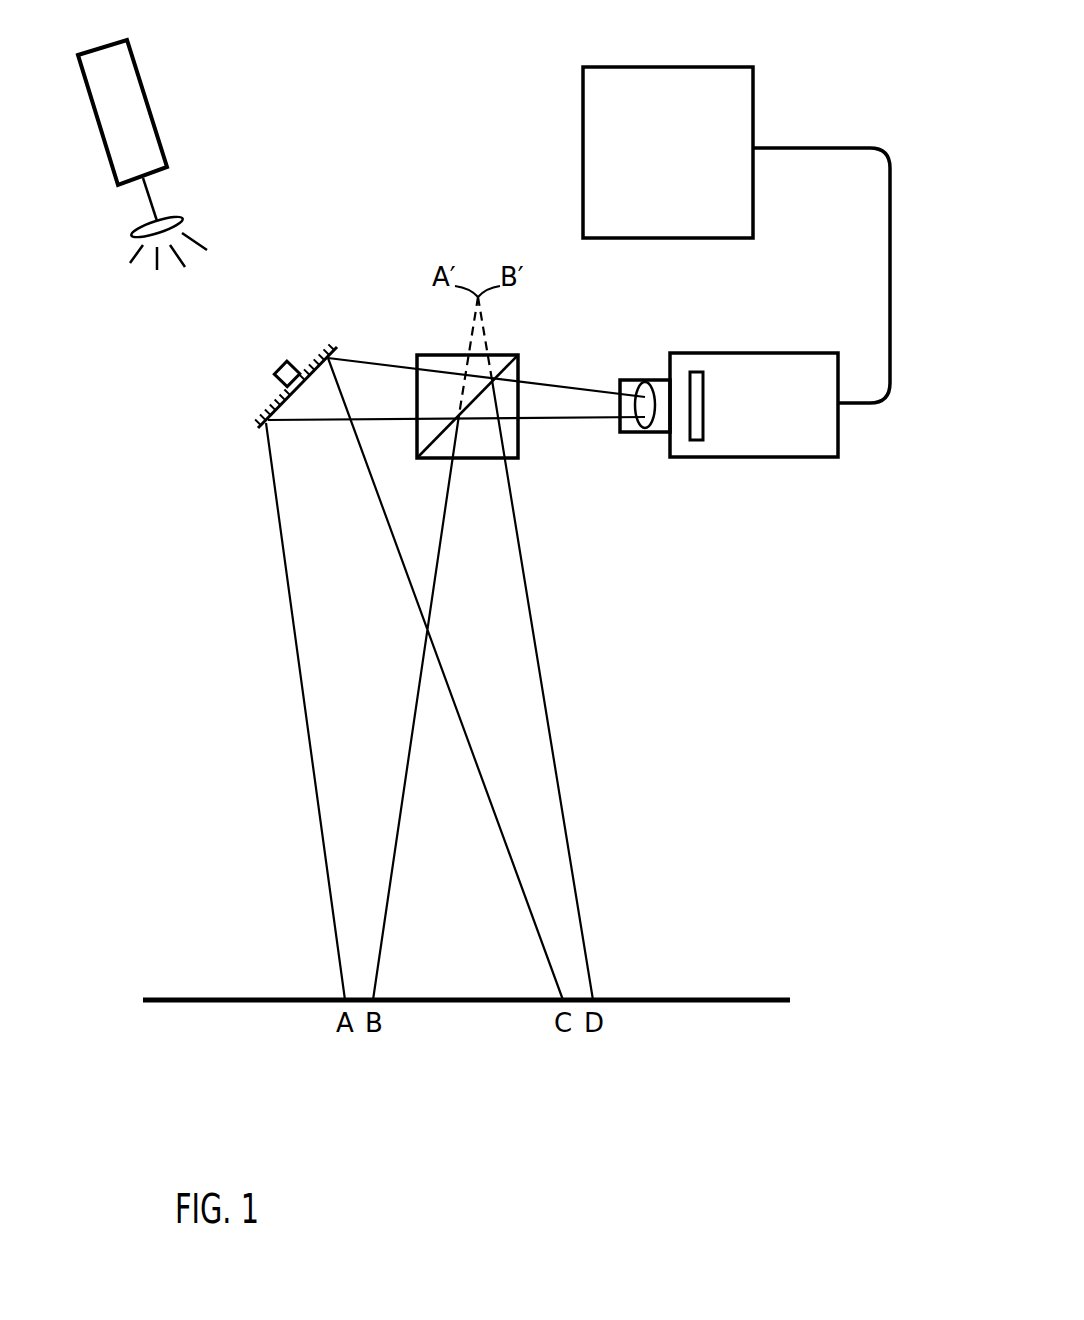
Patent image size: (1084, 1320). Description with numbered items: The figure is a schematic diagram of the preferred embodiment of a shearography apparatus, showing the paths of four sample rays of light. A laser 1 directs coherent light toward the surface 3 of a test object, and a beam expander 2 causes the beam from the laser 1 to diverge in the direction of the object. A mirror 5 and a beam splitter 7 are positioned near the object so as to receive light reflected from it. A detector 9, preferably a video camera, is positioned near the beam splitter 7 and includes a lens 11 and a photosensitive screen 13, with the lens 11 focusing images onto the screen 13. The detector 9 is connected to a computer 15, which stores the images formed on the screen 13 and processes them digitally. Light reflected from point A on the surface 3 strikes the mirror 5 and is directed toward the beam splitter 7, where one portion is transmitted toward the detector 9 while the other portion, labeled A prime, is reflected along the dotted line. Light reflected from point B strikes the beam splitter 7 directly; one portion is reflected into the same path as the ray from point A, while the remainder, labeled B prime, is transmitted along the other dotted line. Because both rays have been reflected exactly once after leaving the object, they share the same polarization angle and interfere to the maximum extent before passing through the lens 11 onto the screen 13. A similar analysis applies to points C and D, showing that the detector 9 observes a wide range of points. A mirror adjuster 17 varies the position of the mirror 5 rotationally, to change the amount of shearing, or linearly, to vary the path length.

The laser 1 is at (127, 67).
The beam expander 2 is at (170, 220).
The surface 3 is at (703, 996).
The mirror 5 is at (265, 420).
The beam splitter 7 is at (512, 440).
The detector 9 is at (760, 450).
The lens 11 is at (643, 393).
The photosensitive screen 13 is at (696, 378).
The computer 15 is at (595, 148).
The mirror adjuster 17 is at (275, 374).